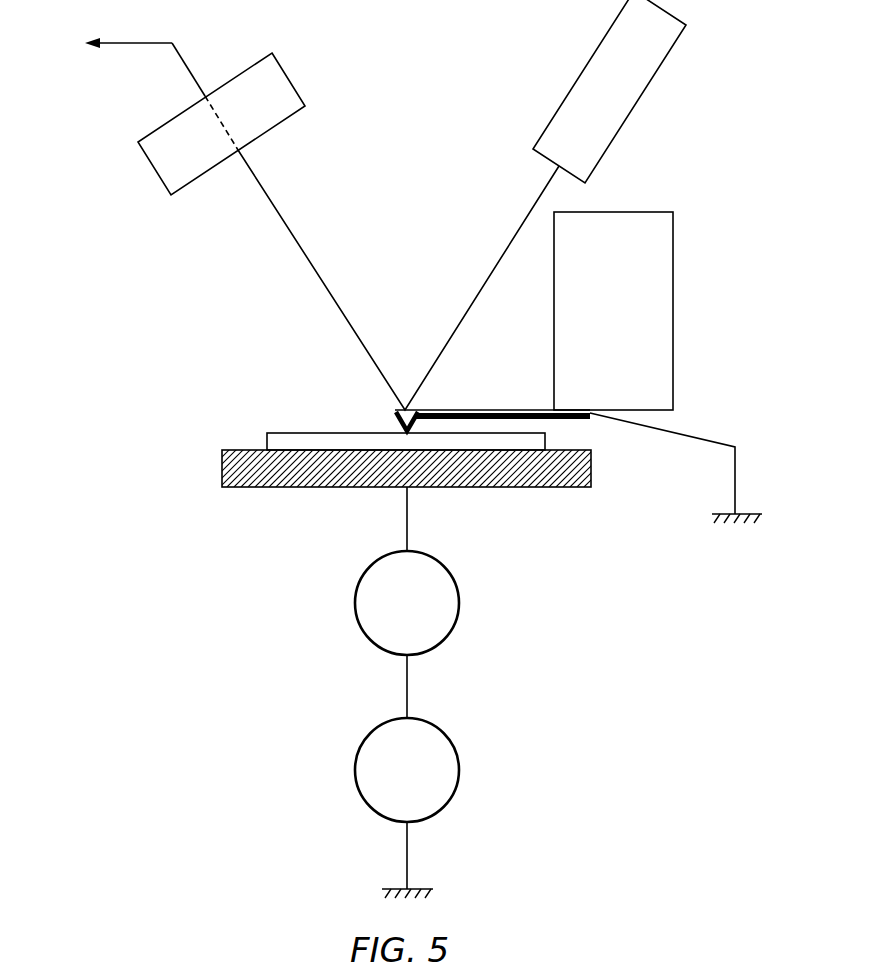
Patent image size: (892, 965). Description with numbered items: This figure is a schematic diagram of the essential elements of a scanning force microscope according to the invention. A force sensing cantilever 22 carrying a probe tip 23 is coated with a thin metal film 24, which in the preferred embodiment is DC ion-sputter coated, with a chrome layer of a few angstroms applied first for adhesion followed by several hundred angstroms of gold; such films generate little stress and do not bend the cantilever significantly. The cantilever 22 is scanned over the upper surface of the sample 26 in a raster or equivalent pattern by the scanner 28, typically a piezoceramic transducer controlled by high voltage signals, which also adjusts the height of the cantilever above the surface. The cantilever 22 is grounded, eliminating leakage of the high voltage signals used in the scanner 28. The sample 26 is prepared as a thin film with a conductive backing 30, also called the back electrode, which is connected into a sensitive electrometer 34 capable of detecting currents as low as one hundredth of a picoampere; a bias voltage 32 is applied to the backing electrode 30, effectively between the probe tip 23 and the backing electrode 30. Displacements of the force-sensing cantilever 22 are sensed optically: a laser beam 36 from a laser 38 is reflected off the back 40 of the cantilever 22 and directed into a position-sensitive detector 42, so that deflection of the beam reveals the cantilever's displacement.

The force sensing cantilever 22 is at (463, 408).
The probe tip 23 is at (410, 427).
The thin metal film 24 is at (398, 420).
The sample 26 is at (267, 443).
The scanner 28 is at (673, 320).
The conductive backing 30 is at (240, 487).
The bias voltage 32 is at (355, 605).
The electrometer 34 is at (355, 770).
The laser beam 36 is at (290, 228).
The laser 38 is at (650, 83).
The back of the cantilever 40 is at (410, 375).
The position-sensitive detector 42 is at (288, 74).